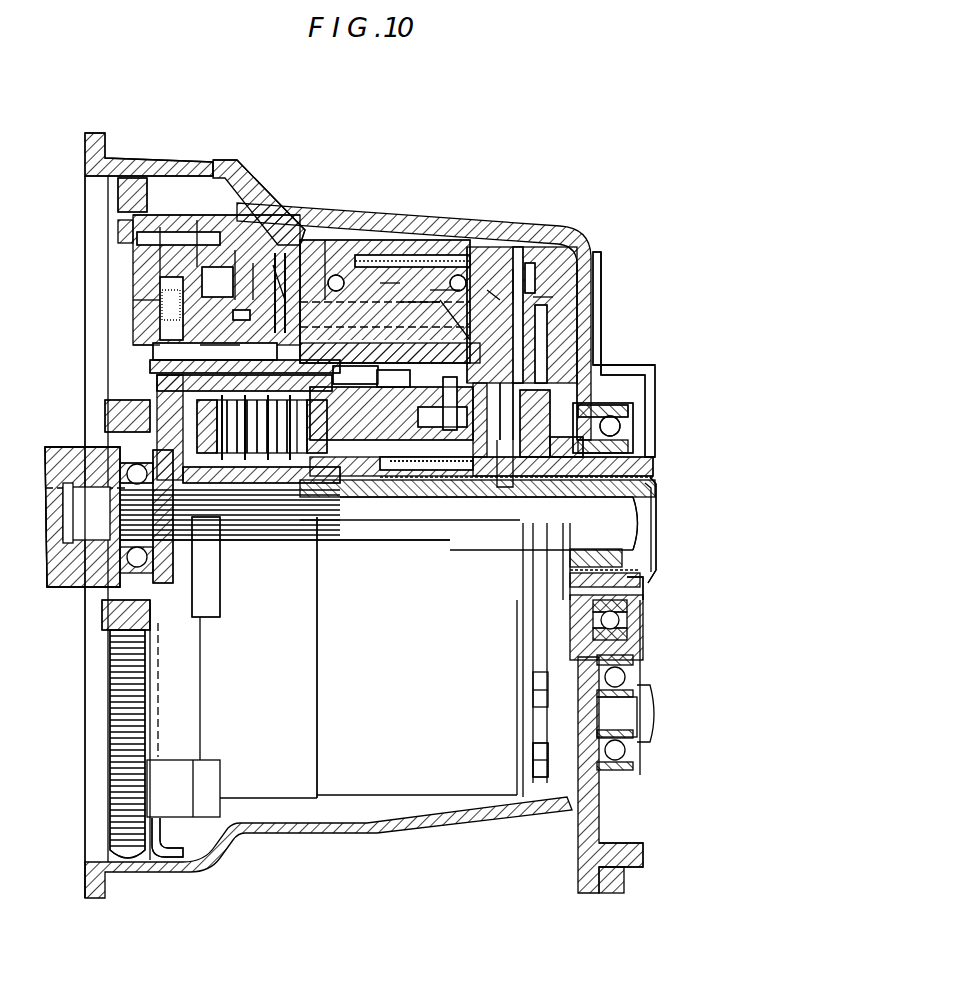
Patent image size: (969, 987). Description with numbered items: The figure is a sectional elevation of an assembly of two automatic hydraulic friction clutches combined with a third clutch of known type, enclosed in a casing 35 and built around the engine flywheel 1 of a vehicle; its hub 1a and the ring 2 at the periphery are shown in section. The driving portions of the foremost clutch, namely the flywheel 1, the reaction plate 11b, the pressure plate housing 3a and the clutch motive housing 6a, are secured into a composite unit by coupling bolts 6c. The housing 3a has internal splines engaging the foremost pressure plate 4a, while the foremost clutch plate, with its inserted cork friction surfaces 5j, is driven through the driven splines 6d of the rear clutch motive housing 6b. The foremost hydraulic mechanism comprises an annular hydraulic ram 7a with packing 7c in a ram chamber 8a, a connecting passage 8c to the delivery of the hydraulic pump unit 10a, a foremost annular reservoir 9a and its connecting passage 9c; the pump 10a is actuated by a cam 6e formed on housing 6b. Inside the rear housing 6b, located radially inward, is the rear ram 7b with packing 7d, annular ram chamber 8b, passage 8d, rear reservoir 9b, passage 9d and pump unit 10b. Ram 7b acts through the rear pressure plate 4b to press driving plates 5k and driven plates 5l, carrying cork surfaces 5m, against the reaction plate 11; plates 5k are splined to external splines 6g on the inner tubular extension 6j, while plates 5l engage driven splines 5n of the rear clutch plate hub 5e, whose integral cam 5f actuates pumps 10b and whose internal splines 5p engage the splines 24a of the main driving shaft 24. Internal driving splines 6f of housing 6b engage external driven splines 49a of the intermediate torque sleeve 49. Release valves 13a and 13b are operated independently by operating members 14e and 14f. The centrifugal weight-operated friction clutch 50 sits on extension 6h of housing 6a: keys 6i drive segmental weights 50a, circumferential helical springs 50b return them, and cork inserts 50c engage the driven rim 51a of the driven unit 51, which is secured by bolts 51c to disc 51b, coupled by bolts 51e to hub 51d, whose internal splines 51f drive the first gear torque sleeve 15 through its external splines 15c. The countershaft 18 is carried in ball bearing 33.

The engine flywheel 1 is at (160, 265).
The housing hub 1a is at (60, 433).
The ring gear 2 is at (108, 718).
The pressure plate housing 3a is at (150, 243).
The foremost pressure plate 4a is at (200, 307).
The rear pressure plate 4b is at (300, 470).
The rear clutch plate hub 5e is at (157, 615).
The cam 5f is at (340, 455).
The cork friction surfaces 5j is at (225, 345).
The driving clutch plates 5k is at (280, 395).
The driven clutch plates 5l is at (290, 395).
The cork friction surfaces 5m is at (335, 400).
The driven splines 5n is at (360, 460).
The bolt 5p is at (122, 418).
The clutch motive housing 6a is at (307, 270).
The rear clutch motive housing 6b is at (392, 283).
The coupling bolts 6c is at (228, 205).
The driven splines 6d is at (180, 357).
The cam 6e is at (330, 255).
The internal driving splines 6f is at (463, 477).
The external splines 6g is at (316, 525).
The extension of clutch housing 6h is at (513, 270).
The key 6i is at (487, 290).
The inner tubular extension 6j is at (205, 473).
The hydraulic ram 7a is at (215, 275).
The hydraulic ram 7b is at (420, 280).
The hydraulic packing 7c is at (225, 295).
The hydraulic packing 7d is at (452, 303).
The ram chamber 8a is at (240, 307).
The annular ram chamber 8b is at (473, 283).
The connecting passage 8c is at (277, 270).
The connecting passage 8d is at (465, 280).
The foremost annular reservoir 9a is at (235, 250).
The rear annular reservoir 9b is at (530, 353).
The connecting passage 9c is at (253, 263).
The connecting passage 9d is at (545, 290).
The hydraulic pump unit 10a is at (280, 243).
The hydraulic pump unit 10b is at (560, 290).
The reaction plate 11 is at (190, 382).
The reaction plate 11b is at (225, 318).
The release valve 13a is at (533, 277).
The release valve 13b is at (467, 485).
The operating member 14e is at (570, 275).
The operating member 14f is at (535, 403).
The first gear torque sleeve 15 is at (613, 423).
The external splines 15c is at (592, 403).
The countershaft 18 is at (645, 715).
The main driving shaft 24 is at (617, 532).
The splines 24a is at (120, 442).
The ball bearing 33 is at (630, 773).
The casing 35 is at (190, 862).
The intermediate torque sleeve 49 is at (492, 480).
The external driven splines 49a is at (430, 483).
The centrifugal weight-operated friction clutch 50 is at (197, 412).
The segmental weights 50a is at (443, 290).
The circumferential helical springs 50b is at (375, 285).
The cork inserts 50c is at (410, 260).
The motor 51 is at (155, 345).
The driven rim 51a is at (440, 300).
The disc 51b is at (527, 360).
The bolts 51c is at (600, 237).
The hub 51d is at (590, 360).
The bolts 51e is at (533, 373).
The internal splines 51f is at (592, 373).